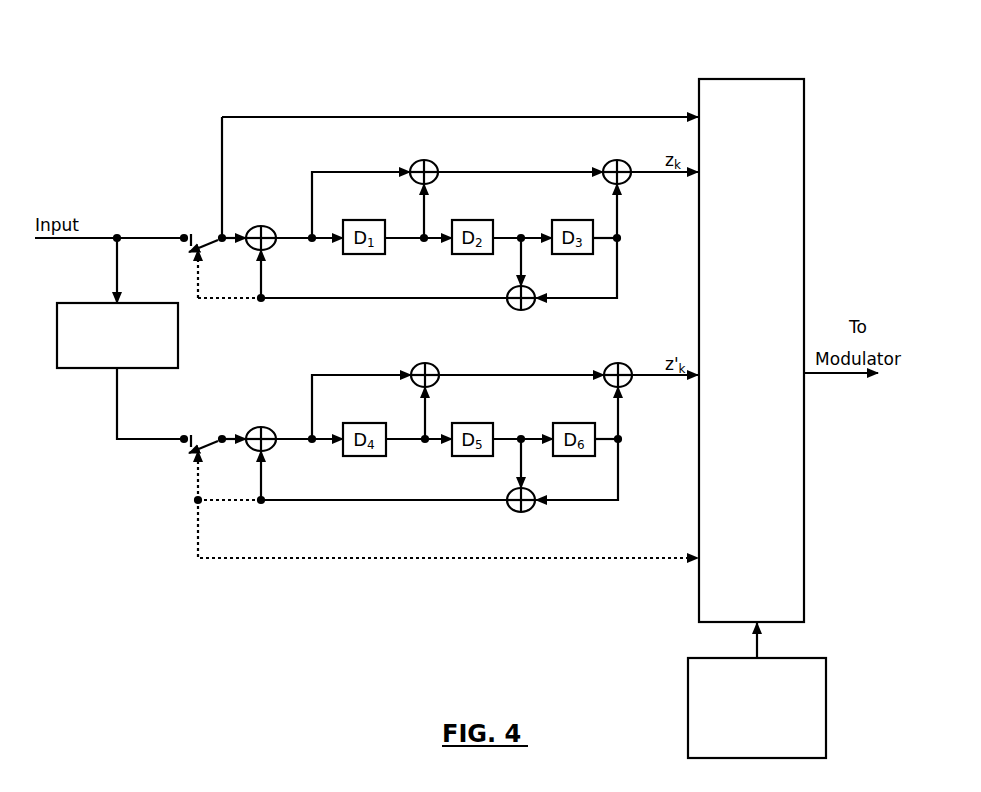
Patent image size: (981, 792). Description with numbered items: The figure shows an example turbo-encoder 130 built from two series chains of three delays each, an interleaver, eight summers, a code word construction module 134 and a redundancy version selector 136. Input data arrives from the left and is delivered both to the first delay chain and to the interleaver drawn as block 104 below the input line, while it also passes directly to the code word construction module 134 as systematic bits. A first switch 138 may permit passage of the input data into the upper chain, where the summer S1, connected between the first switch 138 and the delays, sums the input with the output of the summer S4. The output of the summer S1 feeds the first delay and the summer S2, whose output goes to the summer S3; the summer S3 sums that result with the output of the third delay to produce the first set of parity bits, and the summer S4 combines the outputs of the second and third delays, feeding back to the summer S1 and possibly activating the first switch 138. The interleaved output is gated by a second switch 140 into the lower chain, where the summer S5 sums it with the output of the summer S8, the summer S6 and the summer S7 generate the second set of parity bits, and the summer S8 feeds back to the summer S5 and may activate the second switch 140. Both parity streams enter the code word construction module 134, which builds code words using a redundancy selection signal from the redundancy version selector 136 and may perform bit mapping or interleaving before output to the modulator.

The turbo-encoder 130 is at (160, 107).
The interleaver 104 is at (84, 303).
The first switch 138 is at (204, 238).
The second switch 140 is at (206, 440).
The code word construction module 134 is at (735, 79).
The redundancy version selector 136 is at (688, 688).
The summer S1 is at (260, 226).
The summer S2 is at (412, 163).
The summer S3 is at (605, 163).
The summer S4 is at (509, 288).
The summer S5 is at (262, 427).
The summer S6 is at (412, 366).
The summer S7 is at (606, 366).
The summer S8 is at (508, 491).